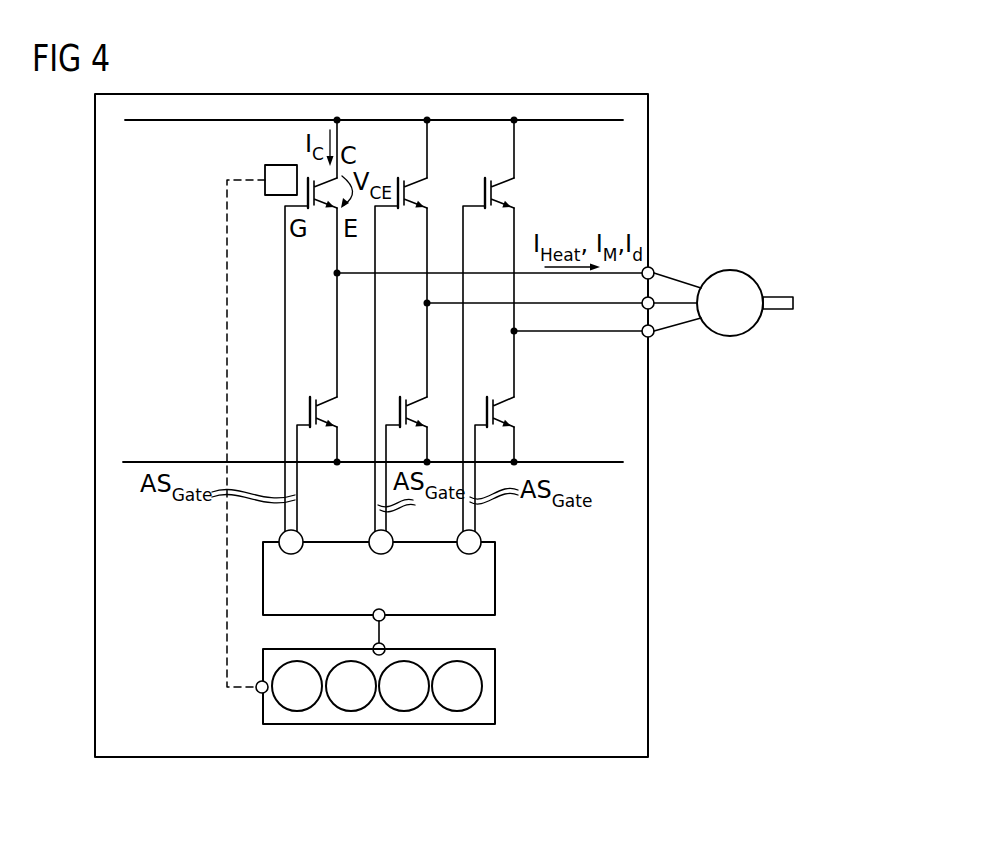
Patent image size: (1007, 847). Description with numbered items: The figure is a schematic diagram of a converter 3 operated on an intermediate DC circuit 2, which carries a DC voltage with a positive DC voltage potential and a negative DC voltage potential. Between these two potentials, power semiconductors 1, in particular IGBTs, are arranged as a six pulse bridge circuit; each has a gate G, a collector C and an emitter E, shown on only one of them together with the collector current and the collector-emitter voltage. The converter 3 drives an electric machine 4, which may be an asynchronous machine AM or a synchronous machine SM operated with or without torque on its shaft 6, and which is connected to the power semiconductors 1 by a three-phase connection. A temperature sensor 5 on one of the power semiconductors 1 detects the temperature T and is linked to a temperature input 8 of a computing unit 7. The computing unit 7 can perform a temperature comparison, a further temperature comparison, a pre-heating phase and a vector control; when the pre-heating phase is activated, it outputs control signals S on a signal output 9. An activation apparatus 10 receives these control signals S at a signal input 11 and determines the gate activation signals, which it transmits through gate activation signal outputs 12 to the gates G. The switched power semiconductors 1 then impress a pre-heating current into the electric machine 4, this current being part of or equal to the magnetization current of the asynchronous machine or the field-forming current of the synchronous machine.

The power semiconductor 1 is at (320, 206).
The intermediate DC circuit 2 is at (150, 122).
The converter 3 is at (650, 400).
The electric machine 4 is at (720, 269).
The temperature sensor 5 is at (272, 196).
The shaft 6 is at (778, 296).
The computing unit 7 is at (497, 685).
The temperature input 8 is at (256, 693).
The signal output 9 is at (373, 647).
The activation apparatus 10 is at (497, 572).
The signal input 11 is at (386, 611).
The gate activation signal output 12 is at (303, 536).